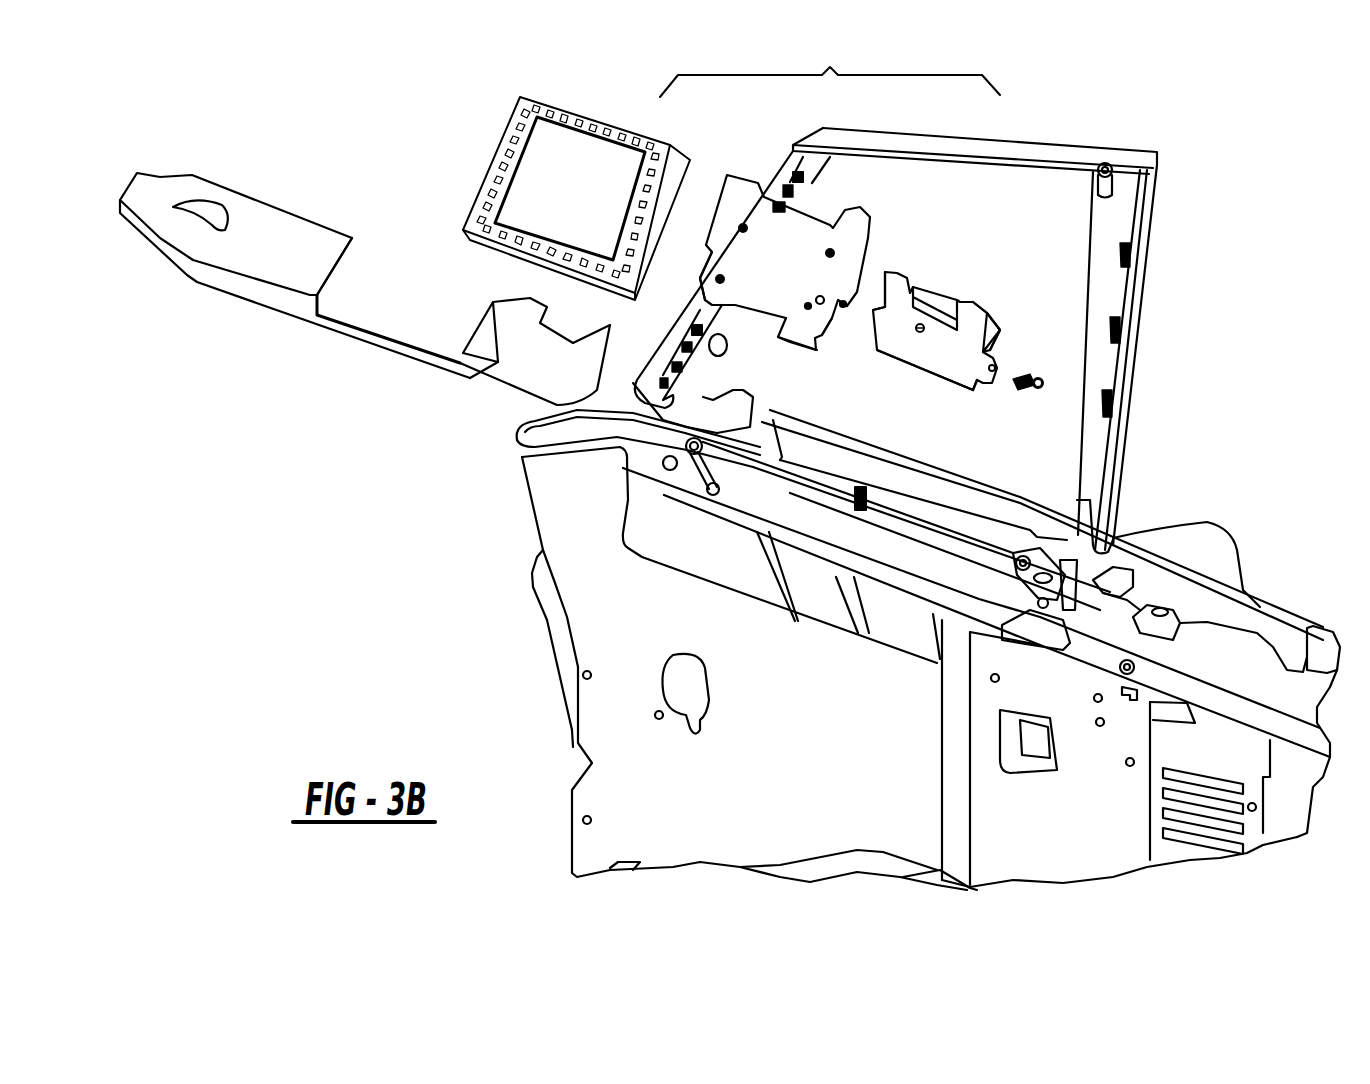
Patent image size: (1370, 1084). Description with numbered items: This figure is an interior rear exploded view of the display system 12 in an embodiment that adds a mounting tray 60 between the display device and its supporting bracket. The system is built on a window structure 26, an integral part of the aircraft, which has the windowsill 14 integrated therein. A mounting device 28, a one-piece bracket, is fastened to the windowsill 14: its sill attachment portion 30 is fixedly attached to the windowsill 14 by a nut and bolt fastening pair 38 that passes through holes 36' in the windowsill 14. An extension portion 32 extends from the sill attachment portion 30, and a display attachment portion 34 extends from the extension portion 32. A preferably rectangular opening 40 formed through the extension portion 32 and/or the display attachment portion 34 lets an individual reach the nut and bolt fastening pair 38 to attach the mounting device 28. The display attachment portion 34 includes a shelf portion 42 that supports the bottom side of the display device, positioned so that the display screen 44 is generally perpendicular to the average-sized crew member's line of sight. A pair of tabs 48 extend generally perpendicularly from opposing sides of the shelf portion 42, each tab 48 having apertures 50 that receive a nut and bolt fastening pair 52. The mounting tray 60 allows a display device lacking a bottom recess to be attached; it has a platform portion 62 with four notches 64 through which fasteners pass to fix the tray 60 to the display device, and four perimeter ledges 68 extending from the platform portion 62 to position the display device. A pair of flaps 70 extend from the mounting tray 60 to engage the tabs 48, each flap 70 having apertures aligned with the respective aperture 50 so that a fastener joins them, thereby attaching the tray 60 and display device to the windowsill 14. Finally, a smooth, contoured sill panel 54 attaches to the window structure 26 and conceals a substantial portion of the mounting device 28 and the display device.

The display system 12 is at (830, 69).
The windowsill 14 is at (1018, 510).
The window structure 26 is at (1143, 347).
The mounting device 28 is at (903, 277).
The sill attachment portion 30 is at (1000, 347).
The extension portion 32 is at (993, 323).
The display attachment portion 34 is at (902, 363).
The holes 36' is at (877, 507).
The nut and bolt fastening pair 38 is at (917, 470).
The opening 40 is at (942, 293).
The shelf portion 42 is at (952, 355).
The display screen 44 is at (567, 200).
The tabs 48 is at (993, 373).
The apertures 50 is at (993, 368).
The nut and bolt fastening pair 52 is at (1040, 393).
The sill panel 54 is at (400, 360).
The mounting tray 60 is at (725, 183).
The platform portion 62 is at (745, 247).
The notches 64 is at (808, 305).
The perimeter ledges 68 is at (812, 345).
The flaps 70 is at (832, 330).